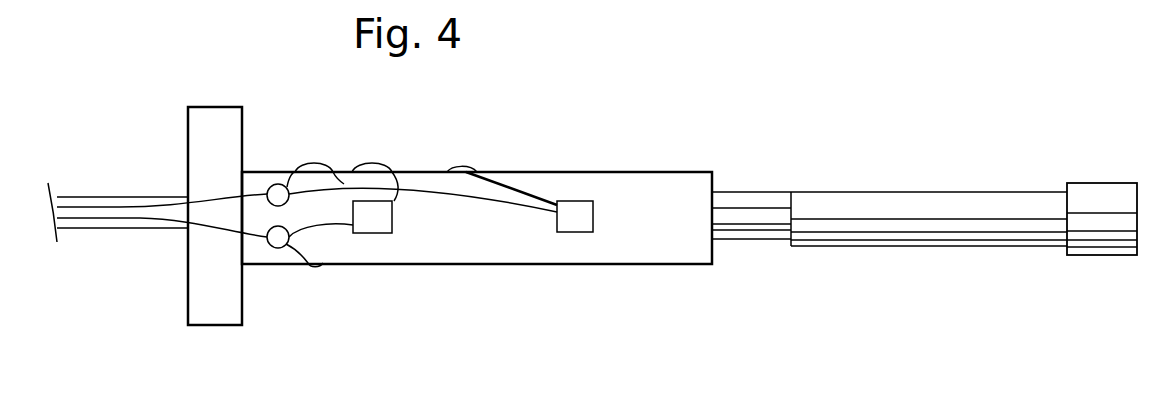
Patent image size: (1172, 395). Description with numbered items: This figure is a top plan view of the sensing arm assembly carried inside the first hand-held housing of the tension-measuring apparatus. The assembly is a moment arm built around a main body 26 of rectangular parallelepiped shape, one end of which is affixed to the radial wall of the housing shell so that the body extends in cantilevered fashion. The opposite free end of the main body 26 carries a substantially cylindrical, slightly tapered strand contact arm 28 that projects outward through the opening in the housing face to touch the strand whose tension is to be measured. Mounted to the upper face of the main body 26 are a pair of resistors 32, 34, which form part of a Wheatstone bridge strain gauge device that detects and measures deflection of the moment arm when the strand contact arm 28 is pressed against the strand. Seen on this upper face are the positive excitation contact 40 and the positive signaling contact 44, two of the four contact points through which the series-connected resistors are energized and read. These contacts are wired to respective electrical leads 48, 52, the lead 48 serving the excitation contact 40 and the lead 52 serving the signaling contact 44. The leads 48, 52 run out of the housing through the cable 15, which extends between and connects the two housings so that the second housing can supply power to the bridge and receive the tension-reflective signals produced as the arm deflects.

The cable 15 is at (73, 196).
The electrical lead 52 is at (122, 207).
The electrical lead 48 is at (148, 220).
The positive signaling contact 44 is at (272, 185).
The positive excitation contact 40 is at (277, 249).
The resistor 34 is at (372, 233).
The resistor 32 is at (570, 232).
The main body 26 is at (678, 264).
The strand contact arm 28 is at (997, 227).